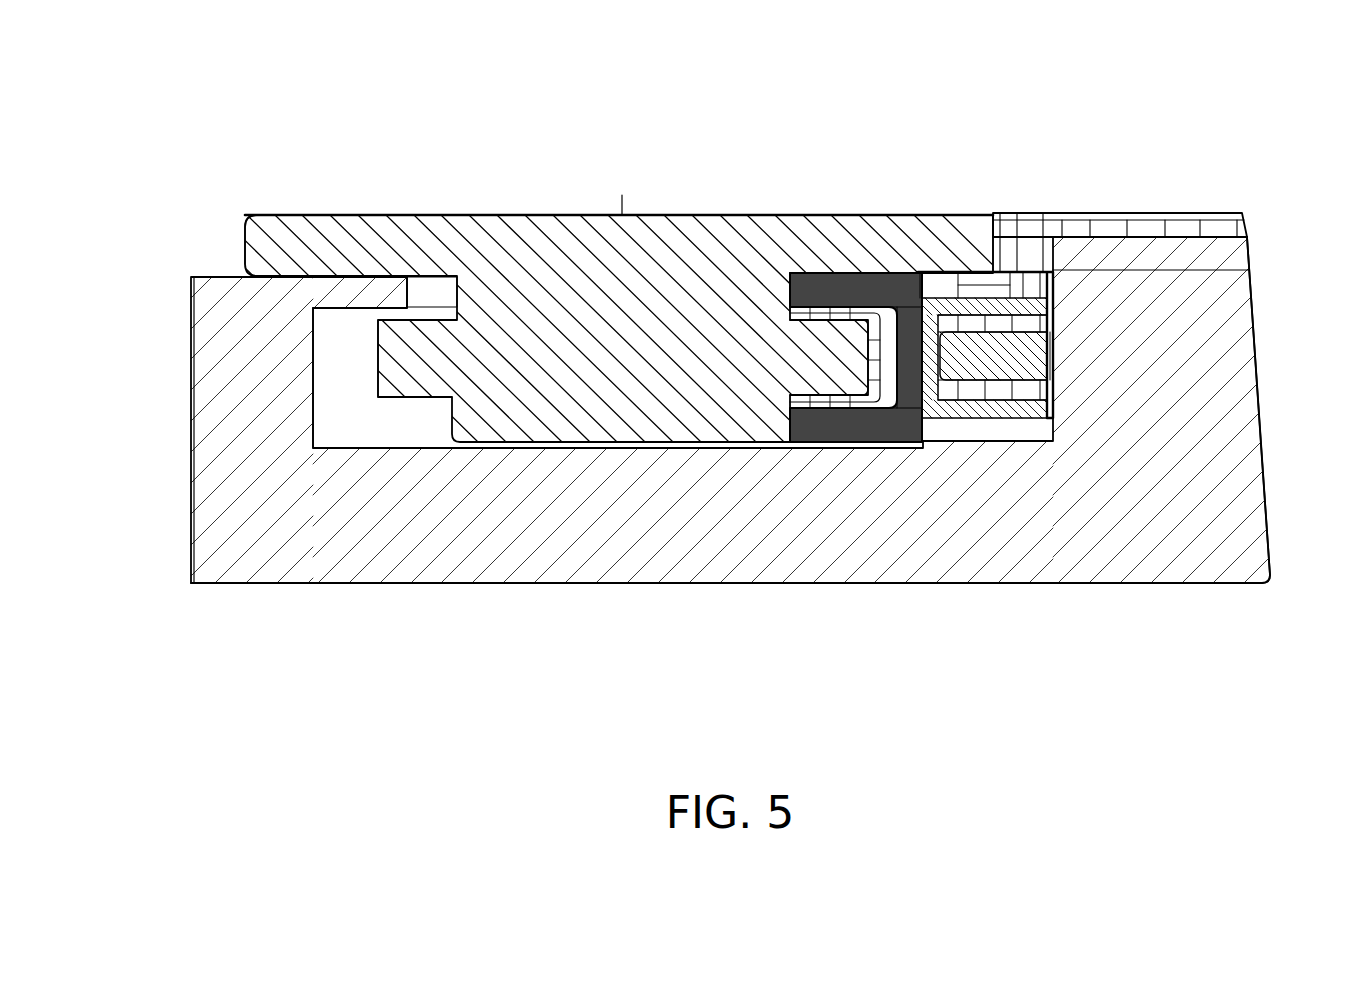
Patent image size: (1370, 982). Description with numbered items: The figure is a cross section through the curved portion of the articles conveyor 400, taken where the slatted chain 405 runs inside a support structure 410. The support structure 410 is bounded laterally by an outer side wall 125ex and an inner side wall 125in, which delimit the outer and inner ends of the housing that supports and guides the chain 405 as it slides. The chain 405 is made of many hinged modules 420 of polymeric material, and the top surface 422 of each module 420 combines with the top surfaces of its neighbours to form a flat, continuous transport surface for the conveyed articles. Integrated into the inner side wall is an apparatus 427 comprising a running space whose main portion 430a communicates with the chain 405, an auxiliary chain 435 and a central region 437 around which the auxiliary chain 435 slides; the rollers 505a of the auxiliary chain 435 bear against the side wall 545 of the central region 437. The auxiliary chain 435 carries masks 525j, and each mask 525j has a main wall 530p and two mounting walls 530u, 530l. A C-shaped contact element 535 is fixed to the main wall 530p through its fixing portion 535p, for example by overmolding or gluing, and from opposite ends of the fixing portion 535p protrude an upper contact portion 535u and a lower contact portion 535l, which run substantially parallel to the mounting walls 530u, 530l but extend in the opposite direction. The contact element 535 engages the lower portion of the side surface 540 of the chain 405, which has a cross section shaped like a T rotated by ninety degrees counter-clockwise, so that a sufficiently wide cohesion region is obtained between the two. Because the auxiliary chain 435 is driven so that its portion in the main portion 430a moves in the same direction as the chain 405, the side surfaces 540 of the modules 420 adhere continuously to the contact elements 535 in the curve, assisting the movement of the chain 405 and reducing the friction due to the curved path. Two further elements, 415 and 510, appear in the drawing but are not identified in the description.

The articles conveyor 400 is at (236, 113).
The slatted chain 405 is at (478, 196).
The support structure 410 is at (442, 583).
The cavity 415 is at (362, 443).
The module 420 is at (590, 215).
The top surface 422 is at (280, 218).
The apparatus 427 is at (1254, 360).
The main portion 430a is at (933, 287).
The auxiliary chain 435 is at (1053, 352).
The central region 437 is at (1178, 315).
The roller 505a is at (1053, 372).
The top block 510 is at (1165, 237).
The mask 525j is at (923, 377).
The lower mounting wall 530l is at (998, 418).
The main wall 530p is at (972, 420).
The upper mounting wall 530u is at (983, 302).
The contact element 535 is at (795, 379).
The lower contact portion 535l is at (828, 427).
The fixing portion 535p is at (910, 373).
The upper contact portion 535u is at (797, 270).
The side surface 540 is at (848, 295).
The side wall 545 is at (1042, 420).
The outer side wall 125ex is at (207, 413).
The inner side wall 125in is at (1237, 553).